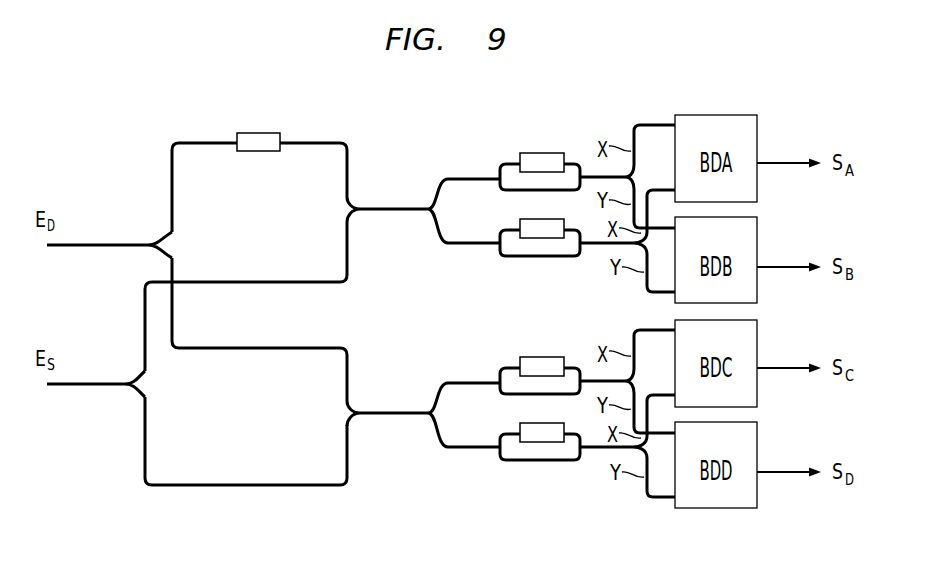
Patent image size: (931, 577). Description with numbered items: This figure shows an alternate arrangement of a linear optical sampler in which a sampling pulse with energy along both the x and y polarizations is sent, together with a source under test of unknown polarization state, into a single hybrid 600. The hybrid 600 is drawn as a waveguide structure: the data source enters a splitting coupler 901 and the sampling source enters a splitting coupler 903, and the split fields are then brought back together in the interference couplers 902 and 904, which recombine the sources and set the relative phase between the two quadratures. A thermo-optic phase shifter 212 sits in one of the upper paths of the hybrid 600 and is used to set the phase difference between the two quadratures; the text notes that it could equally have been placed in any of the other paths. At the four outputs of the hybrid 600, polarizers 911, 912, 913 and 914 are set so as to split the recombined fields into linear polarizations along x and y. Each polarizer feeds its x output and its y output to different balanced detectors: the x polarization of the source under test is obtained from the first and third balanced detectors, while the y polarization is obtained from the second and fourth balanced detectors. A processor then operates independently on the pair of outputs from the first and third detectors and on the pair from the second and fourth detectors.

The hybrid 600 is at (257, 345).
The thermo-optic phase shifter 212 is at (261, 152).
The first optical splitter 901 is at (176, 245).
The first optical coupler 902 is at (423, 210).
The second optical splitter 903 is at (197, 353).
The second optical coupler 904 is at (423, 414).
The polarizer 911 is at (587, 176).
The polarizer 912 is at (587, 241).
The polarizer 913 is at (587, 381).
The polarizer 914 is at (587, 446).